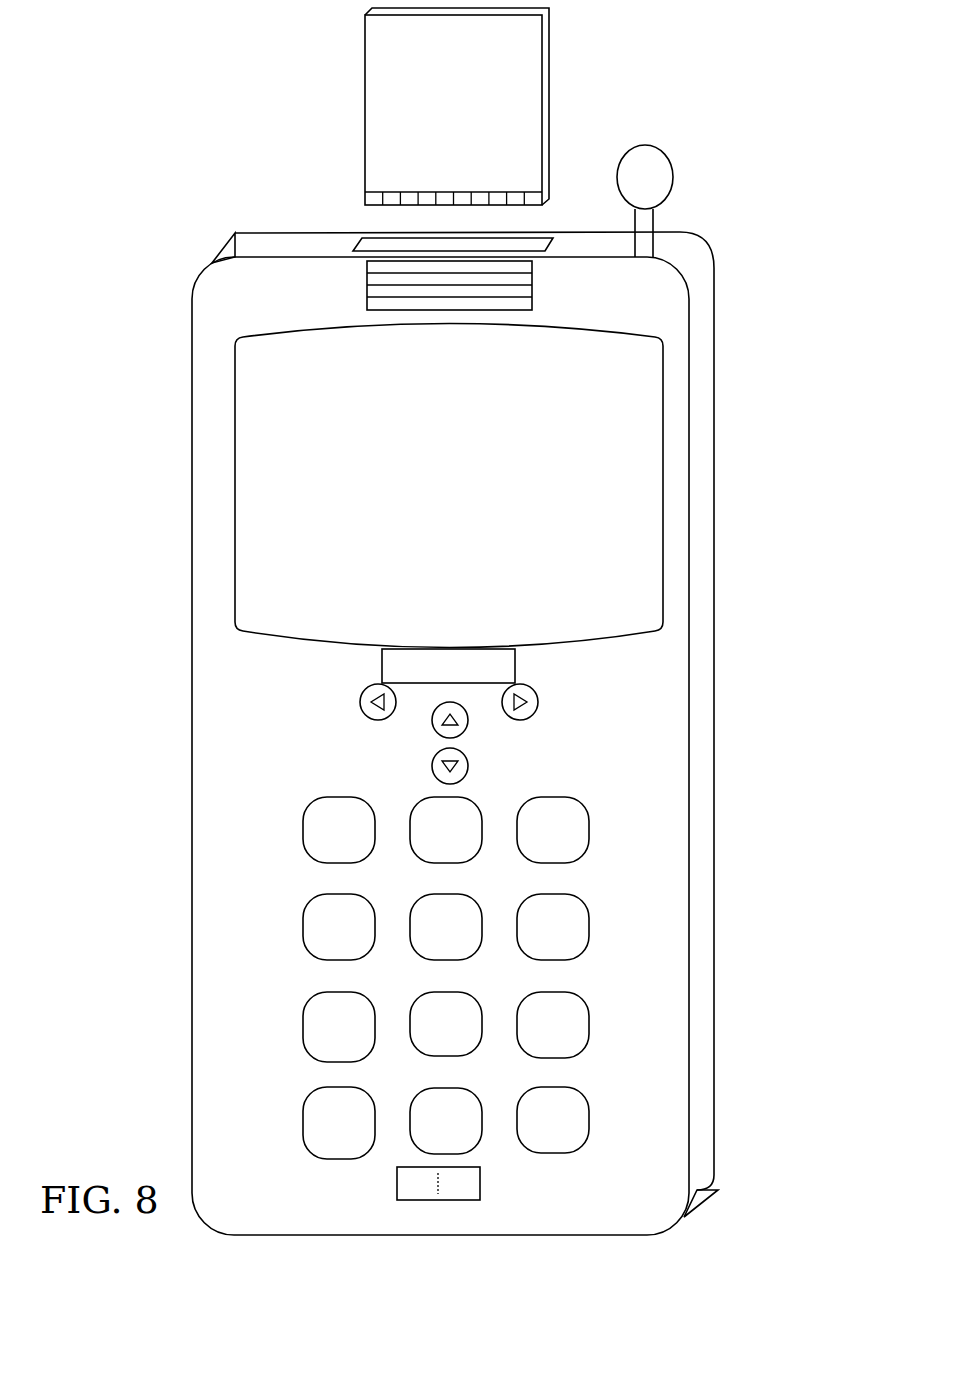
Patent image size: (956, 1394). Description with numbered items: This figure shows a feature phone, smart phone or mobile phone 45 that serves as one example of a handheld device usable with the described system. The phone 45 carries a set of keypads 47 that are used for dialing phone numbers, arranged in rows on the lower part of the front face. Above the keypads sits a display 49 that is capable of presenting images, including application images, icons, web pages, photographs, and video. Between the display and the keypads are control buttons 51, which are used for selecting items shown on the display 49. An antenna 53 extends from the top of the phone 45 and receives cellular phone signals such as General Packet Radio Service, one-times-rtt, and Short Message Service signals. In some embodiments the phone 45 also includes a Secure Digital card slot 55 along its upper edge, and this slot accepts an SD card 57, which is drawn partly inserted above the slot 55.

The mobile phone 45 is at (192, 293).
The keypads 47 is at (608, 833).
The display 49 is at (663, 483).
The control buttons 51 is at (395, 727).
The antenna 53 is at (673, 178).
The Secure Digital (SD) card slot 55 is at (393, 247).
The SD card 57 is at (553, 73).